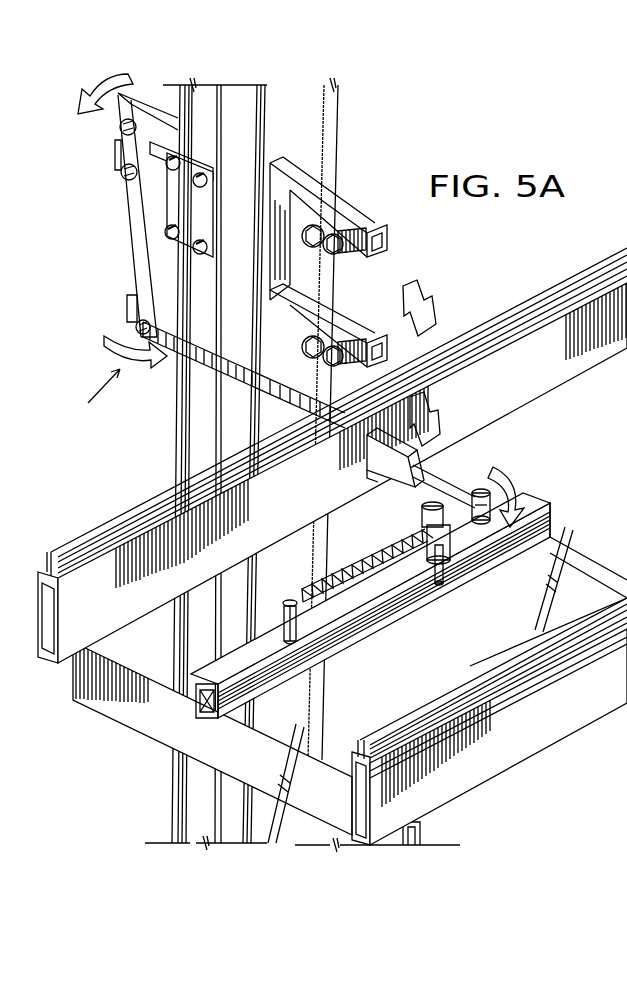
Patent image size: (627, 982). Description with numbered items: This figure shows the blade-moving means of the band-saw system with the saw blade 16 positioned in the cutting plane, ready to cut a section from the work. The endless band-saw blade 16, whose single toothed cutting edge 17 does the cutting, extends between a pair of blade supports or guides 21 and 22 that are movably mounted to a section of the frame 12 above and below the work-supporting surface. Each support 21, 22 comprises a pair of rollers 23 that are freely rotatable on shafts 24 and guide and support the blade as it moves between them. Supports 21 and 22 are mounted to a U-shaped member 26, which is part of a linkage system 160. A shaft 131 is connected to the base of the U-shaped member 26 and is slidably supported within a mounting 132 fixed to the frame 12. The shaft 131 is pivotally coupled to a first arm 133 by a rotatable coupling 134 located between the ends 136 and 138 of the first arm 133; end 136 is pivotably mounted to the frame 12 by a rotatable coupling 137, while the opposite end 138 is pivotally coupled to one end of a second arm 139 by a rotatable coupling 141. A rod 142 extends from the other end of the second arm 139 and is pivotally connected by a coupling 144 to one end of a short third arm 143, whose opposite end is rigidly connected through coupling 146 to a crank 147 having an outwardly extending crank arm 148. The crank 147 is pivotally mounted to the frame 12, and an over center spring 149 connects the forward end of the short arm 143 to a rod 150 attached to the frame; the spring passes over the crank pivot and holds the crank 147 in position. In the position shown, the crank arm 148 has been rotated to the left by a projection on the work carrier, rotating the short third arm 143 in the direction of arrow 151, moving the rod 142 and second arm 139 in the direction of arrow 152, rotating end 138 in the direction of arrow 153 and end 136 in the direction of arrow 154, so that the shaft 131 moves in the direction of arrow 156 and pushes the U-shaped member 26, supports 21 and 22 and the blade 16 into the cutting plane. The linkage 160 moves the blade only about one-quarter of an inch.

The frame 12 is at (203, 440).
The band-saw blade 16 is at (342, 120).
The cutting edge 17 is at (322, 133).
The blade support 21 is at (366, 208).
The blade support 22 is at (367, 333).
The rollers 23 is at (307, 228).
The shafts 24 is at (330, 250).
The U-shaped member 26 is at (375, 228).
The shaft 131 is at (165, 198).
The mounting 132 is at (178, 184).
The first arm 133 is at (148, 235).
The rotatable coupling 134 is at (121, 171).
The end of first arm 136 is at (117, 111).
The rotatable coupling 137 is at (121, 130).
The end of first arm 138 is at (137, 331).
The second arm 139 is at (200, 358).
The rotatable coupling 141 is at (129, 306).
The rod 142 is at (430, 480).
The short third arm 143 is at (409, 605).
The coupling 144 is at (480, 490).
The coupling 146 is at (424, 511).
The crank 147 is at (452, 548).
The crank arm 148 is at (459, 570).
The over center spring 149 is at (358, 563).
The rod 150 is at (297, 627).
The arrow 151 is at (510, 478).
The arrow 152 is at (427, 412).
The arrow 153 is at (108, 350).
The arrow 154 is at (100, 91).
The arrow 156 is at (425, 303).
The linkage system 160 is at (84, 391).